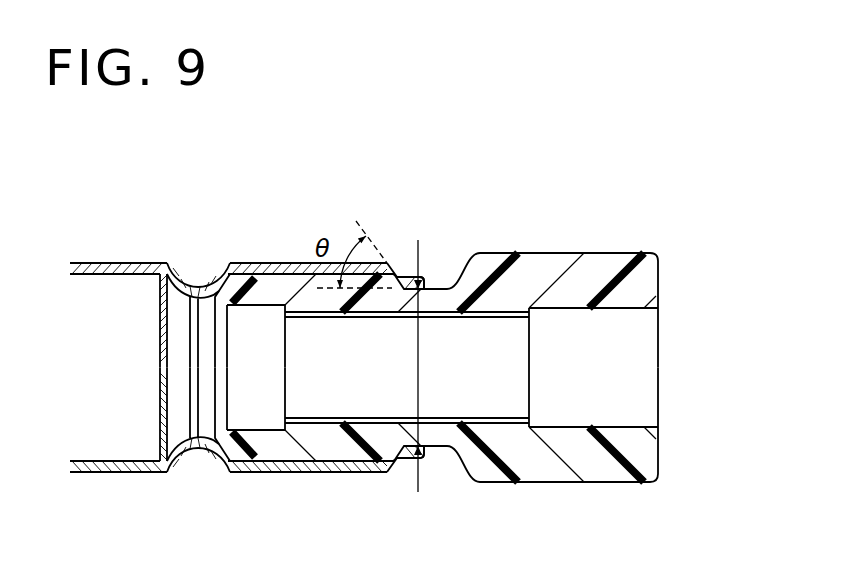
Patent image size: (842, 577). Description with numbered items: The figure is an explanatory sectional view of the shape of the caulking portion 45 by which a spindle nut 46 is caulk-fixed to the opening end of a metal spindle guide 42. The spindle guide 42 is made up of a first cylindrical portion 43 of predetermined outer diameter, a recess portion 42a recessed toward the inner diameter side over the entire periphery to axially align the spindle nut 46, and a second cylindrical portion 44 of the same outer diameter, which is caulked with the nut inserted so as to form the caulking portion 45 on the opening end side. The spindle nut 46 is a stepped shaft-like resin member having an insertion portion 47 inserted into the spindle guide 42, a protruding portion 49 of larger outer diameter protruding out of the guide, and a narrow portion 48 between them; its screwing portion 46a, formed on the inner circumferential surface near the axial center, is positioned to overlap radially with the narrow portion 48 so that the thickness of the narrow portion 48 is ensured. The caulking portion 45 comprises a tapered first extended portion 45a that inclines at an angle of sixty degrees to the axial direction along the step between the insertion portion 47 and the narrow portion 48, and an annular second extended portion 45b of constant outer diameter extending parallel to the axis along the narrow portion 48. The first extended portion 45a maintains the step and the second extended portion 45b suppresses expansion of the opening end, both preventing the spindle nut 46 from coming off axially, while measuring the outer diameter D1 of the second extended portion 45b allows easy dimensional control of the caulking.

The spindle guide 42 is at (268, 245).
The recess portion 42a is at (198, 453).
The first cylindrical portion 43 is at (107, 473).
The second cylindrical portion 44 is at (285, 475).
The caulking portion 45 is at (530, 212).
The first extended portion 45a is at (407, 280).
The second extended portion 45b is at (440, 287).
The spindle nut 46 is at (617, 245).
The screwing portion 46a is at (533, 353).
The insertion portion 47 is at (352, 453).
The narrow portion 48 is at (447, 437).
The protruding portion 49 is at (573, 465).
The outer diameter of the second extended portion D1 is at (400, 371).